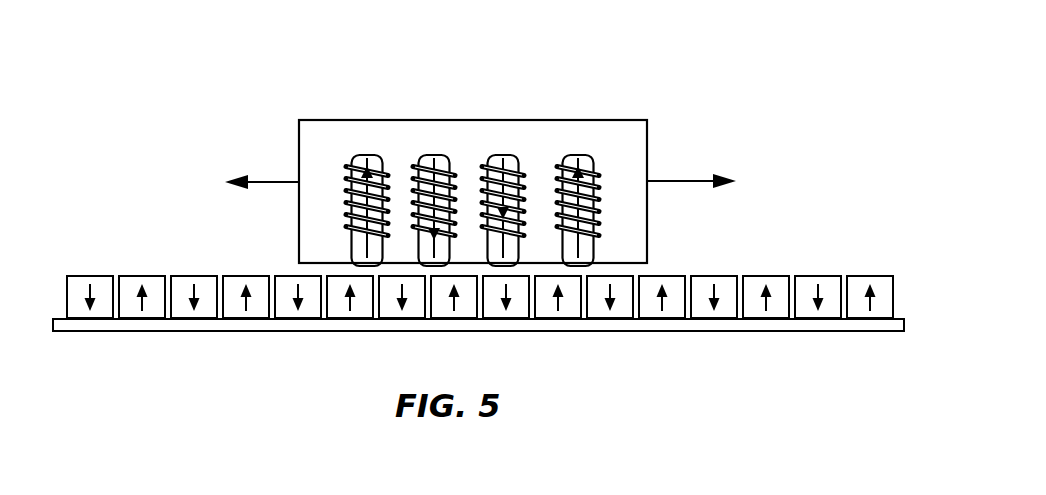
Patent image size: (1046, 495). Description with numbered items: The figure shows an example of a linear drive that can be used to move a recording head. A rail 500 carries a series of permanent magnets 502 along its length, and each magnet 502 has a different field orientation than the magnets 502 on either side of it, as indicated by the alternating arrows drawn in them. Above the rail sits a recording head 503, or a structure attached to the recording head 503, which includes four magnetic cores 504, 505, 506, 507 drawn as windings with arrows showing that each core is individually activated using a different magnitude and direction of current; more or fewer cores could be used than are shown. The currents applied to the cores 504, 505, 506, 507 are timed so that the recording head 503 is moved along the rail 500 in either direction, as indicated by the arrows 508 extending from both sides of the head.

The rail 500 is at (900, 264).
The permanent magnets 502 is at (185, 277).
The recording head 503 is at (326, 120).
The magnetic core 504 is at (371, 155).
The magnetic core 505 is at (437, 155).
The magnetic core 506 is at (505, 155).
The magnetic core 507 is at (585, 155).
The arrows 508 is at (253, 181).